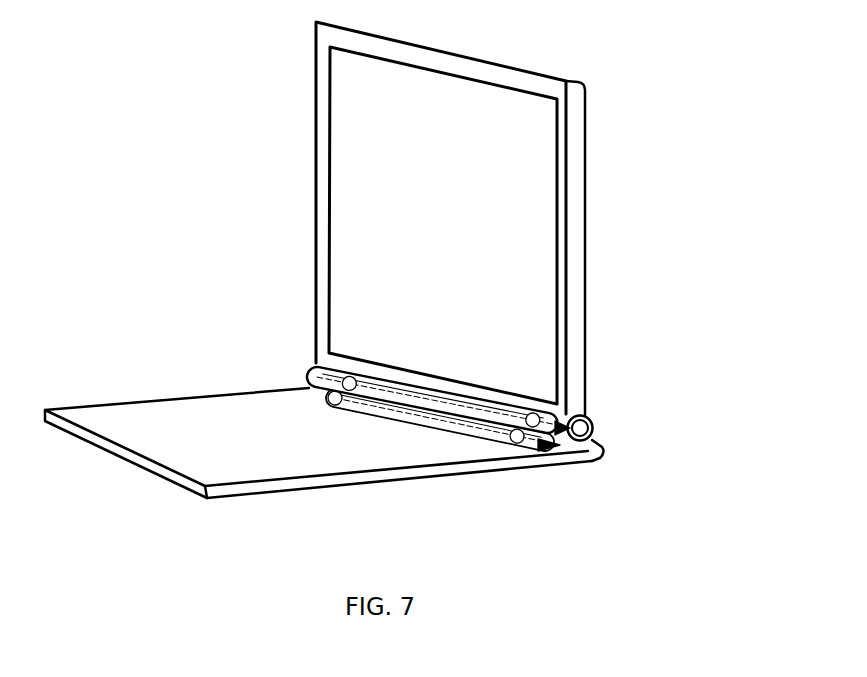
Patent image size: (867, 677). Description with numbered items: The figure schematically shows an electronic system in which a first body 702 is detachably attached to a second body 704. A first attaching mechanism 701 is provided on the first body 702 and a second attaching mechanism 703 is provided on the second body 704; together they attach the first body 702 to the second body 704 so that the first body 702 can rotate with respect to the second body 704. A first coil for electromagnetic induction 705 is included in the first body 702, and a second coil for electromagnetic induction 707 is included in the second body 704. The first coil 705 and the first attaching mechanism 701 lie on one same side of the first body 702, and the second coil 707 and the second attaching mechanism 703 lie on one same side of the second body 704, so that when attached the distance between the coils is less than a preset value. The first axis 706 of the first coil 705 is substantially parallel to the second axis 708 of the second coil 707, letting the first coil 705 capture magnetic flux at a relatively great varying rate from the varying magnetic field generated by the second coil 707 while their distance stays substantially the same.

The first attaching mechanism 701 is at (318, 362).
The first body 702 is at (565, 80).
The second attaching mechanism 703 is at (603, 444).
The second body 704 is at (208, 500).
The first coil for electromagnetic induction 705 is at (533, 400).
The first axis 706 is at (589, 411).
The second coil for electromagnetic induction 707 is at (487, 442).
The second axis 708 is at (535, 455).